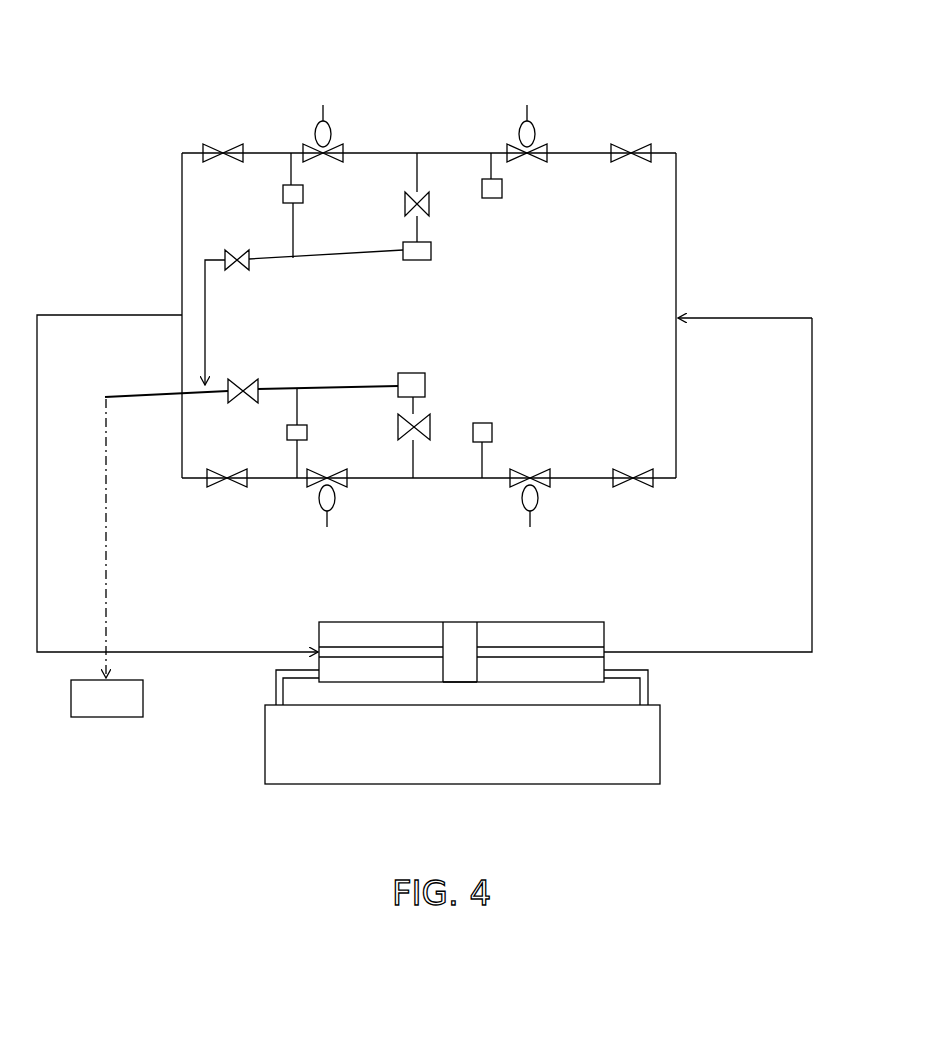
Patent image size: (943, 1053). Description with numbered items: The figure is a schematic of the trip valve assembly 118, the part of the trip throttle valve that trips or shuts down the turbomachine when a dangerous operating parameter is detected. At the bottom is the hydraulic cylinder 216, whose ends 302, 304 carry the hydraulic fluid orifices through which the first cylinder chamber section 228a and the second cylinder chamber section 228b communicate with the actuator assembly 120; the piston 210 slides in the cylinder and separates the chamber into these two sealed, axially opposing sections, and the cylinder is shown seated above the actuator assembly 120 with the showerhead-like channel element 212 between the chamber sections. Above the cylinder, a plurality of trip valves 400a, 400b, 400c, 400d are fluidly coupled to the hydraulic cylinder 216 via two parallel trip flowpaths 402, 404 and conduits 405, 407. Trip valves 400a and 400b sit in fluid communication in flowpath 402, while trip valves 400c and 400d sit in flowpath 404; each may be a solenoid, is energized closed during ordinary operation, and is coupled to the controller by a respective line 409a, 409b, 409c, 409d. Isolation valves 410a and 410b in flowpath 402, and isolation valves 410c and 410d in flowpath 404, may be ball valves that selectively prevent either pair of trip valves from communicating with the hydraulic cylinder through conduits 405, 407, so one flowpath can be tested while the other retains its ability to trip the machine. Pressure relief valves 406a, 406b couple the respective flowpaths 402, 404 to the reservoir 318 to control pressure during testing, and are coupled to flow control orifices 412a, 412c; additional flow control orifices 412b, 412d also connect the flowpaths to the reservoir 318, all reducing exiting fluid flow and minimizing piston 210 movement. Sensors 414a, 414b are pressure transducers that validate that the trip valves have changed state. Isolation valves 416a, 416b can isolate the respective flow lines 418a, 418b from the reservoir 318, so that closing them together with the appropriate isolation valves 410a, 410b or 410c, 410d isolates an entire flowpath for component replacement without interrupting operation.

The trip valve assembly 118 is at (120, 40).
The actuator assembly 120 is at (462, 744).
The piston 210 is at (462, 672).
The showerhead 212 is at (496, 650).
The hydraulic cylinder 216 is at (486, 620).
The first cylinder chamber section 228a is at (378, 628).
The second cylinder chamber section 228b is at (543, 628).
The end of the hydraulic cylinder 302 is at (316, 633).
The end of the hydraulic cylinder 304 is at (608, 633).
The reservoir 318 is at (107, 558).
The trip valve 400a is at (530, 468).
The trip valve 400b is at (327, 467).
The trip valve 400c is at (528, 167).
The trip valve 400d is at (323, 166).
The trip flowpath 402 is at (436, 478).
The trip flowpath 404 is at (437, 153).
The conduit 405 is at (37, 482).
The pressure relief valve 406a is at (438, 430).
The pressure relief valve 406b is at (436, 206).
The conduit 407 is at (812, 486).
The line 409a is at (532, 520).
The line 409b is at (329, 520).
The line 409c is at (529, 108).
The line 409d is at (325, 108).
The isolation valve 410a is at (633, 490).
The isolation valve 410b is at (227, 490).
The isolation valve 410c is at (631, 140).
The isolation valve 410d is at (222, 140).
The flow control orifice 412a is at (420, 373).
The flow control orifice 412b is at (307, 432).
The flow control orifice 412c is at (430, 262).
The flow control orifice 412d is at (283, 192).
The sensor 414a is at (492, 424).
The sensor 414b is at (502, 198).
The isolation valve 416a is at (246, 374).
The isolation valve 416b is at (242, 274).
The flow line 418a is at (345, 384).
The flow line 418b is at (341, 262).